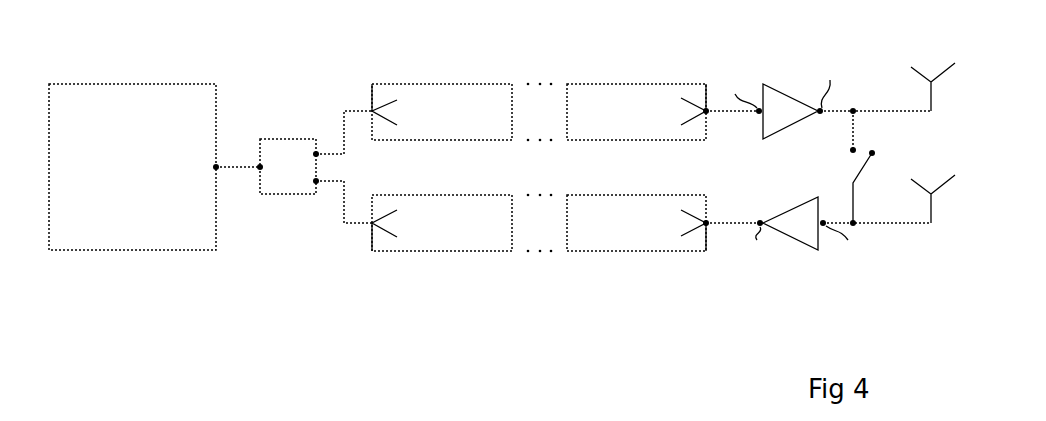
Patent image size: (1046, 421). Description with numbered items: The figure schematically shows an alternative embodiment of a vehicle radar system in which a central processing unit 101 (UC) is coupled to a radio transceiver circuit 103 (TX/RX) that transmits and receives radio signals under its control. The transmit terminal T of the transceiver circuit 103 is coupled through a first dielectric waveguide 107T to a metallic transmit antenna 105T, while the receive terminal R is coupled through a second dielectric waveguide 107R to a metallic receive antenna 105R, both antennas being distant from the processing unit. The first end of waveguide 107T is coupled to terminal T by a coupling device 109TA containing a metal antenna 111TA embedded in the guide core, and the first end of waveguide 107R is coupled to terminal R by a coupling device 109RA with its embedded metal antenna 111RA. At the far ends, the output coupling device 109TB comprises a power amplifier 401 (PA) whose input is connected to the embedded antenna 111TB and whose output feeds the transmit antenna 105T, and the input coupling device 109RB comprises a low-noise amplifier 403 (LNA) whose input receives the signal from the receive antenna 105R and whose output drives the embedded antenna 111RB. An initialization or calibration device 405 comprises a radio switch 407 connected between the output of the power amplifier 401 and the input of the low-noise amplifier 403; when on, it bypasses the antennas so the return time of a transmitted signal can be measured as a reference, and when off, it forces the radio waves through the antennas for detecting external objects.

The central processing unit 101 is at (83, 84).
The radio transceiver circuit 103 is at (287, 139).
The transmit antenna 105T is at (921, 72).
The receive antenna 105R is at (921, 183).
The first dielectric waveguide 107T is at (443, 84).
The second dielectric waveguide 107R is at (440, 195).
The coupling device 109TA is at (378, 72).
The coupling device 109RA is at (386, 264).
The output coupling device 109TB is at (768, 72).
The input coupling device 109RB is at (789, 264).
The metal antenna 111TA is at (395, 110).
The metal antenna 111RA is at (395, 222).
The metal antenna 111TB is at (692, 111).
The metal antenna 111RB is at (692, 222).
The power amplifier 401 is at (785, 132).
The low-noise amplifier 403 is at (805, 198).
The initialization or calibration device 405 is at (863, 86).
The radio switch 407 is at (862, 172).